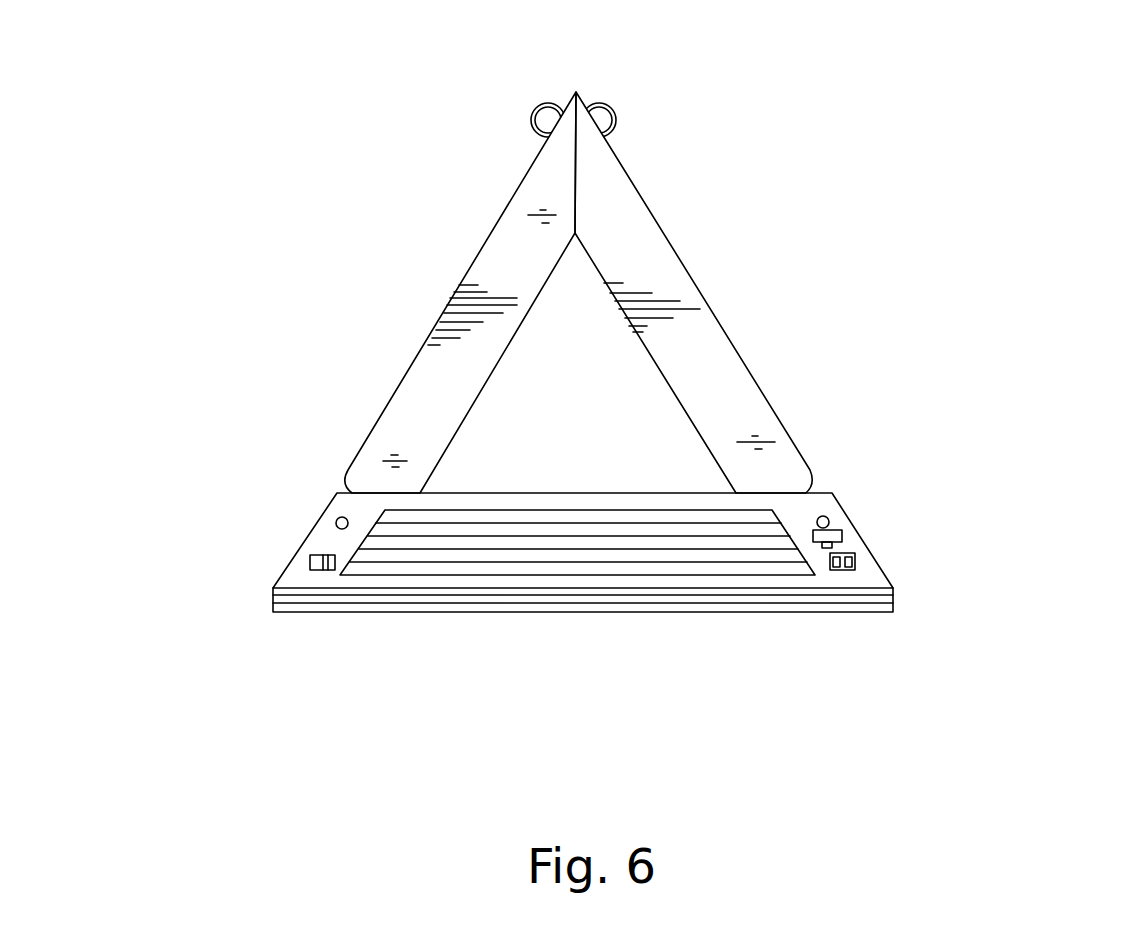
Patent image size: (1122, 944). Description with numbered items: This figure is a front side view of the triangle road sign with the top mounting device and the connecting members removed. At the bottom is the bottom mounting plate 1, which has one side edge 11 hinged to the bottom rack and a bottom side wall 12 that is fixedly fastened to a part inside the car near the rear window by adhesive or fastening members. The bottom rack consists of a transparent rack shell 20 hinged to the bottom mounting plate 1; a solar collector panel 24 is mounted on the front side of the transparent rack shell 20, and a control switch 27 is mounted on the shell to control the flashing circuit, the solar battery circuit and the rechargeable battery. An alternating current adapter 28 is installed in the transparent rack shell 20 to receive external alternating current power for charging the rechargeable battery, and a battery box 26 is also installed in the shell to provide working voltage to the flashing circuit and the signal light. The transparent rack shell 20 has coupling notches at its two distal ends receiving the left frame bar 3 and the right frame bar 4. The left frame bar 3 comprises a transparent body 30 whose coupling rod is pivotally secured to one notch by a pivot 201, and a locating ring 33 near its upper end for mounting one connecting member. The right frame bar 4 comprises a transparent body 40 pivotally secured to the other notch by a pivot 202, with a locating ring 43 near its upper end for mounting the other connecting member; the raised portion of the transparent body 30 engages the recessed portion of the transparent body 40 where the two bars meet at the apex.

The bottom mounting plate 1 is at (585, 612).
The side edge 11 is at (675, 600).
The bottom side wall 12 is at (495, 613).
The transparent rack shell 20 is at (562, 492).
The solar collector panel 24 is at (460, 560).
The battery box 26 is at (818, 538).
The control switch 27 is at (322, 573).
The alternating current adapter 28 is at (843, 572).
The pivot 201 is at (830, 522).
The pivot 202 is at (337, 525).
The left frame bar 3 is at (748, 345).
The transparent body 30 is at (707, 296).
The right frame bar 4 is at (398, 363).
The transparent body 40 is at (453, 296).
The locating ring 43 is at (538, 110).
The locating ring 33 is at (615, 118).